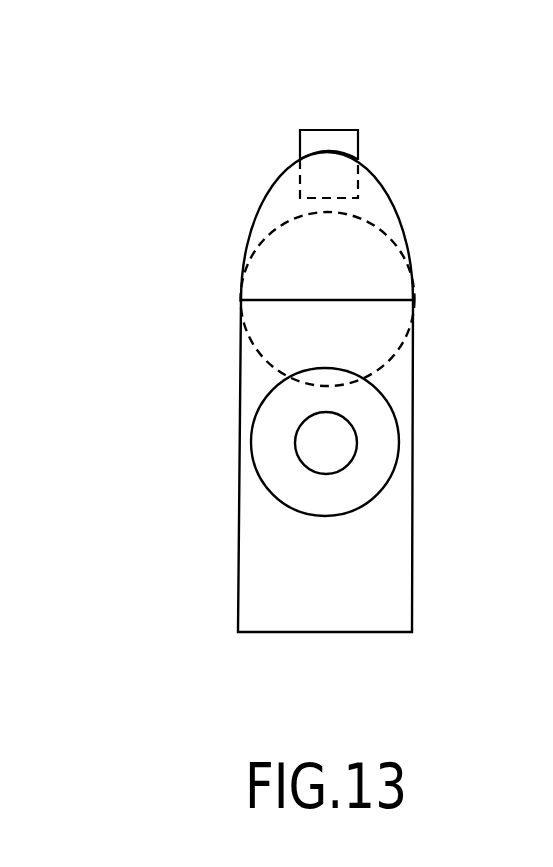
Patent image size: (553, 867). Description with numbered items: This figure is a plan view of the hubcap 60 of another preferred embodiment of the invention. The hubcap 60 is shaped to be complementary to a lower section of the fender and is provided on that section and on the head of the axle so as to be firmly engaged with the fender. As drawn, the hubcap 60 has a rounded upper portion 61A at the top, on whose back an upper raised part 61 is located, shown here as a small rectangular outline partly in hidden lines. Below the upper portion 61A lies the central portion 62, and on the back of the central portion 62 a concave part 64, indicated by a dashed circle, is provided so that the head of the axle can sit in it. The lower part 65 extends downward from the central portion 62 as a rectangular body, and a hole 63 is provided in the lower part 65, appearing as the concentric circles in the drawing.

The hubcap 60 is at (422, 243).
The upper raised part 61 is at (321, 142).
The upper portion 61A is at (370, 200).
The central portion 62 is at (403, 372).
The hole 63 is at (335, 447).
The concave part 64 is at (298, 272).
The lower part 65 is at (262, 522).